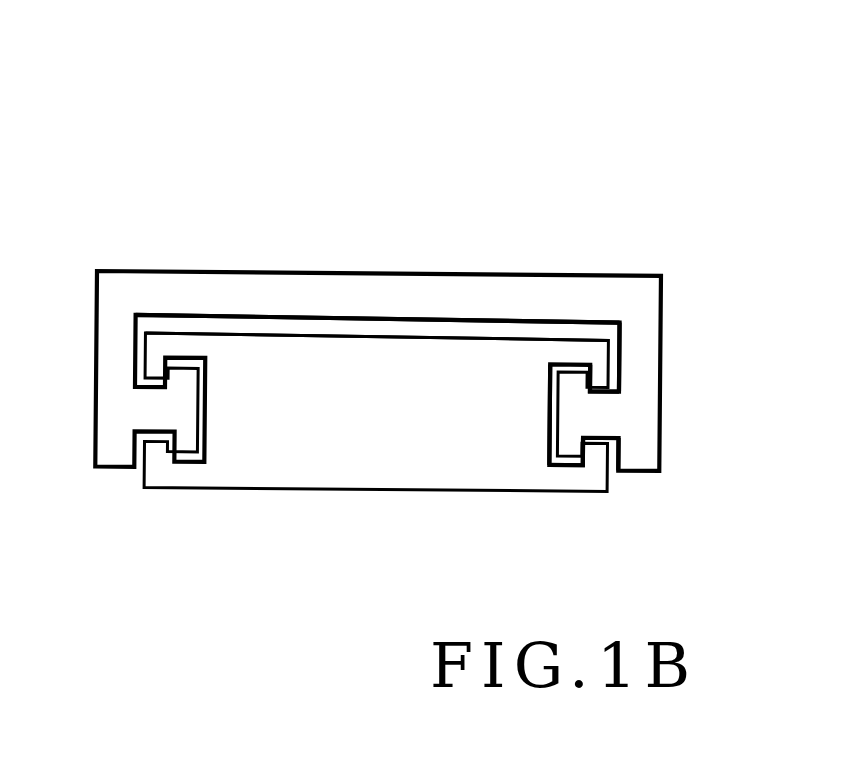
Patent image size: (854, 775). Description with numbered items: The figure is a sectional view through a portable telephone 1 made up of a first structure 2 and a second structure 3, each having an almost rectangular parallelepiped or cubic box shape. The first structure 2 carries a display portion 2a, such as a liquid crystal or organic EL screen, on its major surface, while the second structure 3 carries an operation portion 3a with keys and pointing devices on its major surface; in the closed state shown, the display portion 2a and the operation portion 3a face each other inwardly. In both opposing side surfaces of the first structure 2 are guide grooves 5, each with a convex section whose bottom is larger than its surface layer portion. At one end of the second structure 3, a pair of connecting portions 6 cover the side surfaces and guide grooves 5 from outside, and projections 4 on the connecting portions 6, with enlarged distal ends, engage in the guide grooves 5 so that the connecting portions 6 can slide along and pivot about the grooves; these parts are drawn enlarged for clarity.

The portable telephone 1 is at (88, 128).
The first structure 2 is at (250, 475).
The display portion 2a is at (538, 334).
The second structure 3 is at (203, 285).
The operation portion 3a is at (441, 318).
The projection 4 is at (593, 414).
The guide groove 5 is at (567, 470).
The connecting portion 6 is at (667, 328).